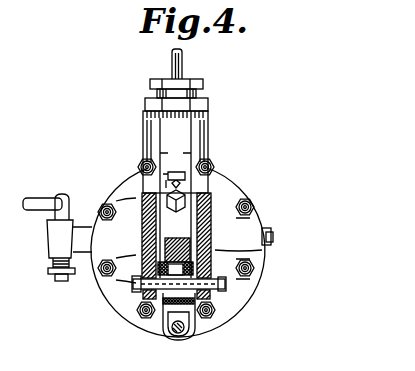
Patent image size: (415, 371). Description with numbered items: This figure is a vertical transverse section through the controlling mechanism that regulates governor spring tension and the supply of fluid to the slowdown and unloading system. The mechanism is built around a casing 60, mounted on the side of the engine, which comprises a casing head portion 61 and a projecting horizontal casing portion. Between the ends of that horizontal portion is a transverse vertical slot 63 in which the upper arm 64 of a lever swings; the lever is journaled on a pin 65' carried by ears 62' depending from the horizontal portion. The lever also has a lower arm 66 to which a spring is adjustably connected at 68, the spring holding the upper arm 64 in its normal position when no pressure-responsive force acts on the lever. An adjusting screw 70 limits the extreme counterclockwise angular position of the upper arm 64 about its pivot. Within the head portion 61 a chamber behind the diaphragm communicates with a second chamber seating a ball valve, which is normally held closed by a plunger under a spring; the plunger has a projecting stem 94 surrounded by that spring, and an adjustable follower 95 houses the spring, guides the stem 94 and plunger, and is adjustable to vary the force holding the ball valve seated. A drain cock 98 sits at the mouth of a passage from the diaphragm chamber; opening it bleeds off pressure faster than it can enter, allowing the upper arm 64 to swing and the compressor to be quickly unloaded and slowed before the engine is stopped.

The casing 60 is at (141, 131).
The casing head portion 61 is at (123, 181).
The ears 62' is at (172, 319).
The slot 63 is at (263, 245).
The upper arm 64 is at (180, 223).
The pin 65' is at (211, 287).
The lower arm 66 is at (172, 337).
The adjustable spring connection 68 is at (183, 334).
The adjusting screw 70 is at (190, 190).
The projecting stem 94 is at (178, 63).
The adjustable follower 95 is at (203, 85).
The drain cock 98 is at (63, 229).